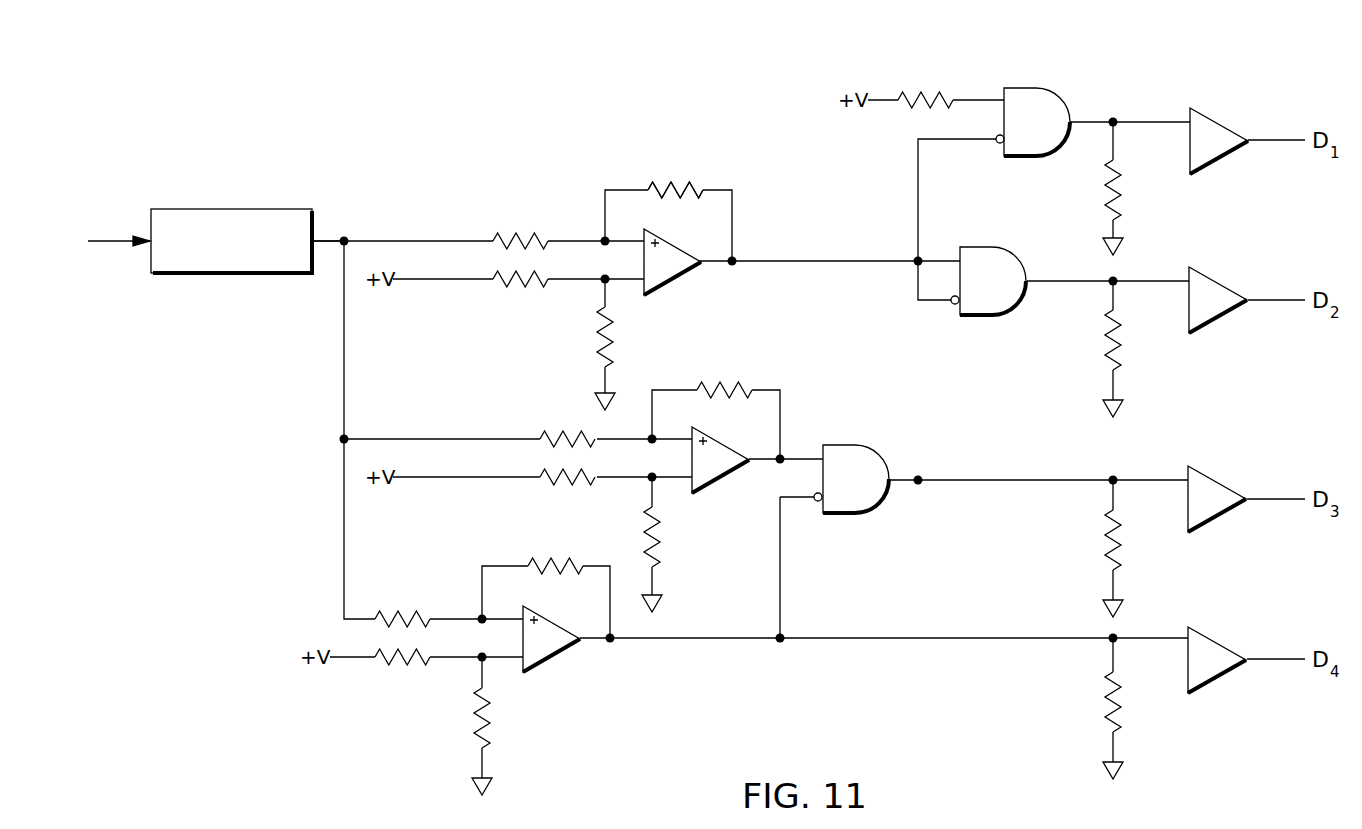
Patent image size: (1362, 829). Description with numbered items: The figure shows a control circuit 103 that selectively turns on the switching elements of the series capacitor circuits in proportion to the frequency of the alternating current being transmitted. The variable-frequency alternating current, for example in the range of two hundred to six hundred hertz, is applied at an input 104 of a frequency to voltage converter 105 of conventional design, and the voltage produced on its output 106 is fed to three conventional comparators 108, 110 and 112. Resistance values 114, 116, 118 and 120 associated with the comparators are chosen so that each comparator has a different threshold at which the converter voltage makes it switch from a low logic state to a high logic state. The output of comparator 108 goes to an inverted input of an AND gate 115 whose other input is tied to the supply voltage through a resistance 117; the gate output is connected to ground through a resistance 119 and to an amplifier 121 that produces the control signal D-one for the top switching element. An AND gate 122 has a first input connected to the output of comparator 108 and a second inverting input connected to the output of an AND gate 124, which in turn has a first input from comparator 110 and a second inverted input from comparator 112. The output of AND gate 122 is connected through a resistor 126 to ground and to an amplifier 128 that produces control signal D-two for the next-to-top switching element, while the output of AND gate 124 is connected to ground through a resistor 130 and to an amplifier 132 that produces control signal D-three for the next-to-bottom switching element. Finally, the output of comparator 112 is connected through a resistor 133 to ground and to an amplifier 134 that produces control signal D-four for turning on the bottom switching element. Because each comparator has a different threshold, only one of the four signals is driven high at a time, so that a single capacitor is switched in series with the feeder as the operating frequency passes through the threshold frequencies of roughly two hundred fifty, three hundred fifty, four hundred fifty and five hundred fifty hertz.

The control circuit 103 is at (588, 108).
The input 104 is at (105, 240).
The frequency to voltage converter 105 is at (234, 208).
The output 106 is at (327, 237).
The comparator 108 is at (680, 278).
The comparator 110 is at (723, 480).
The comparator 112 is at (550, 655).
The resistance 114 is at (663, 187).
The first NAND gate 115 is at (1023, 85).
The resistance 116 is at (512, 223).
The pull-up resistor 117 is at (927, 95).
The resistance 118 is at (510, 287).
The load resistor 119 is at (1108, 173).
The resistance 120 is at (612, 334).
The first output buffer 121 is at (1208, 113).
The AND gate 122 is at (973, 318).
The AND gate 124 is at (835, 445).
The resistor 126 is at (1118, 343).
The amplifier 128 is at (1208, 272).
The resistor 130 is at (1115, 532).
The amplifier 132 is at (1208, 470).
The load resistor 133 is at (1115, 687).
The amplifier 134 is at (1208, 632).